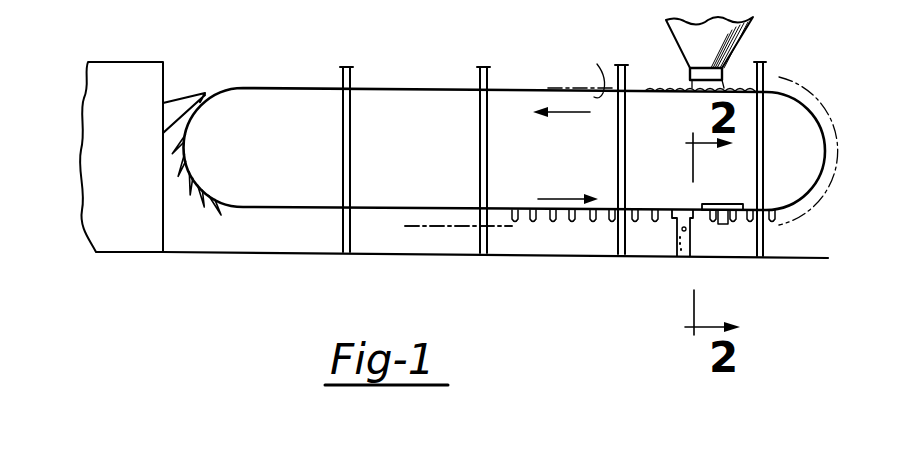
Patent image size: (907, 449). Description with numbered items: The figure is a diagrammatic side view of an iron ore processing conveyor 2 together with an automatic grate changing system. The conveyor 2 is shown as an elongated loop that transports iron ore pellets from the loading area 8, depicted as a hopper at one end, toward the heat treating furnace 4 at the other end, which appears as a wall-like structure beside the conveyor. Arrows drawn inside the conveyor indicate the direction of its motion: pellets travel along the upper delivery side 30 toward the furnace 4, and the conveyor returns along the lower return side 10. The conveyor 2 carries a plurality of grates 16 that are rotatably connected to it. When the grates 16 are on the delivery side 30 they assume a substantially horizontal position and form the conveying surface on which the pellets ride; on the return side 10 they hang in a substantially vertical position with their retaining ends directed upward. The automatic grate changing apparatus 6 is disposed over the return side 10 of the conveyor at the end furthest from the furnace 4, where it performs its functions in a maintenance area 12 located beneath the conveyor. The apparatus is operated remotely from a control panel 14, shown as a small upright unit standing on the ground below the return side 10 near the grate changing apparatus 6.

The iron ore processing conveyor 2 is at (805, 105).
The heat treating furnace 4 is at (152, 85).
The automatic grate changing apparatus 6 is at (740, 212).
The loading area 8 is at (725, 90).
The return side 10 is at (438, 209).
The maintenance area 12 is at (608, 233).
The control panel 14 is at (680, 253).
The grates 16 is at (510, 226).
The delivery side 30 is at (588, 69).